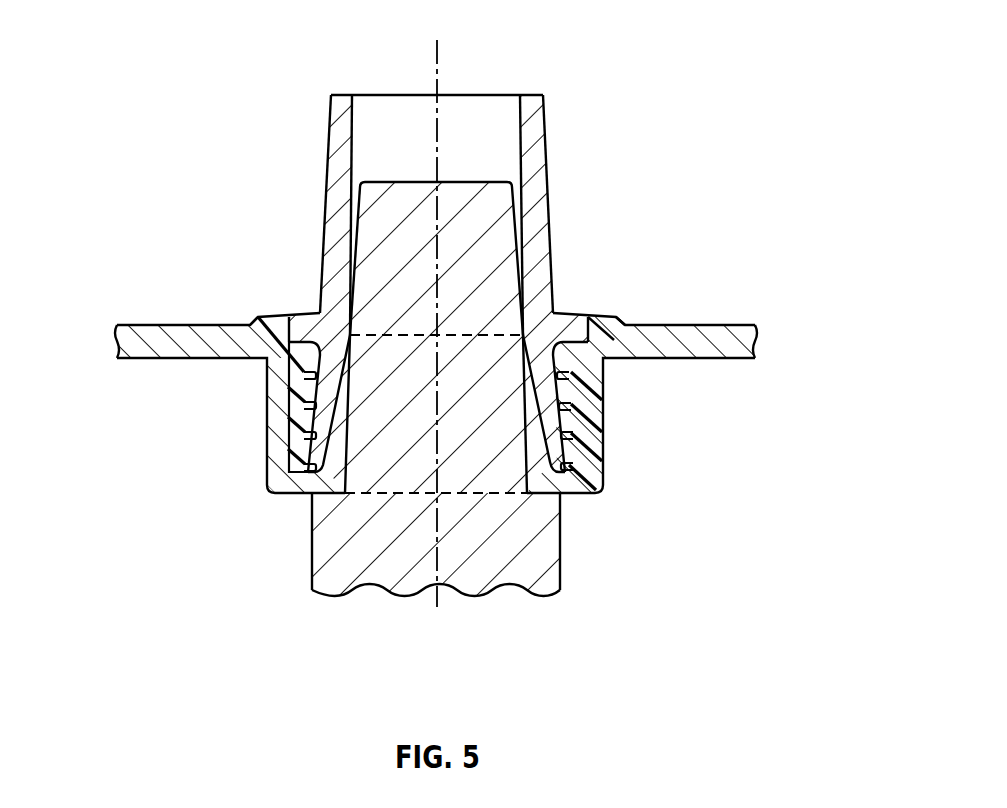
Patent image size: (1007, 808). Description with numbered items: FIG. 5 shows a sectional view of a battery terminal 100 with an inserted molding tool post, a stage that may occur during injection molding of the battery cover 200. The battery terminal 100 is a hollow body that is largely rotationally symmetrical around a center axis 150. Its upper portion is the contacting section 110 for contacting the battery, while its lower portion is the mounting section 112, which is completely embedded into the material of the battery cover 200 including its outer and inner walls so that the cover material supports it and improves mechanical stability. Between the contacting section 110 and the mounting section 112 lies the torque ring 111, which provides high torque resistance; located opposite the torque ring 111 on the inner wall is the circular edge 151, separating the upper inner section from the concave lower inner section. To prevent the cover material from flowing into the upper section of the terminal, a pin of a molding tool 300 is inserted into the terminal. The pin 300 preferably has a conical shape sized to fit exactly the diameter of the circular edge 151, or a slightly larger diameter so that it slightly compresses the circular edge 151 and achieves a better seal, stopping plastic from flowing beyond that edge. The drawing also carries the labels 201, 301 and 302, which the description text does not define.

The battery terminal 100 is at (445, 347).
The contacting section 110 is at (444, 283).
The torque ring 111 is at (570, 315).
The mounting section 112 is at (557, 420).
The center axis 150 is at (435, 47).
The circular edge 151 is at (467, 337).
The battery cover 200 is at (436, 461).
The hole 201 is at (527, 420).
The pin of a molding tool 300 is at (408, 396).
The contact edge 301 is at (350, 337).
The tapered surface 302 is at (468, 340).